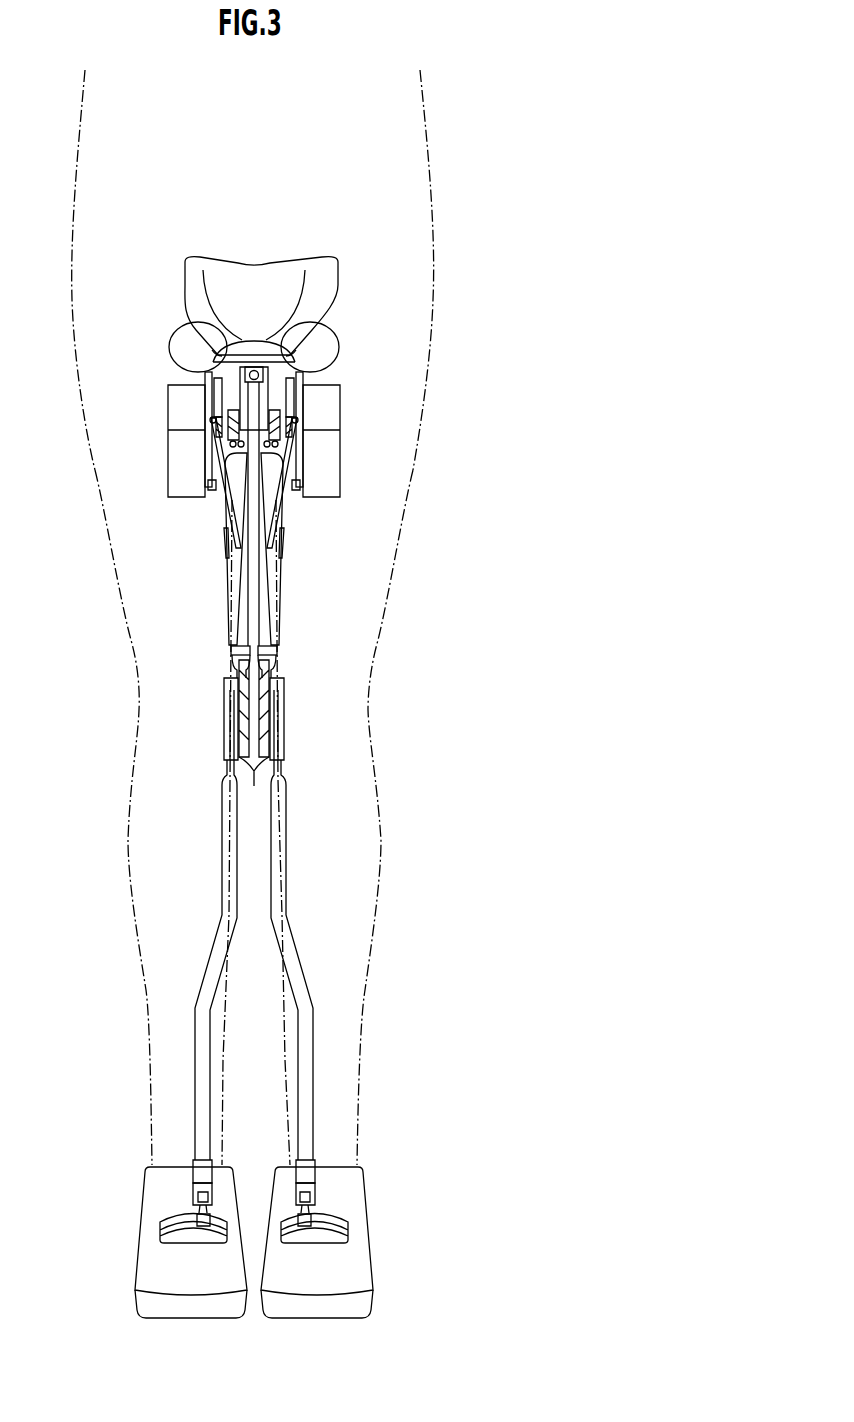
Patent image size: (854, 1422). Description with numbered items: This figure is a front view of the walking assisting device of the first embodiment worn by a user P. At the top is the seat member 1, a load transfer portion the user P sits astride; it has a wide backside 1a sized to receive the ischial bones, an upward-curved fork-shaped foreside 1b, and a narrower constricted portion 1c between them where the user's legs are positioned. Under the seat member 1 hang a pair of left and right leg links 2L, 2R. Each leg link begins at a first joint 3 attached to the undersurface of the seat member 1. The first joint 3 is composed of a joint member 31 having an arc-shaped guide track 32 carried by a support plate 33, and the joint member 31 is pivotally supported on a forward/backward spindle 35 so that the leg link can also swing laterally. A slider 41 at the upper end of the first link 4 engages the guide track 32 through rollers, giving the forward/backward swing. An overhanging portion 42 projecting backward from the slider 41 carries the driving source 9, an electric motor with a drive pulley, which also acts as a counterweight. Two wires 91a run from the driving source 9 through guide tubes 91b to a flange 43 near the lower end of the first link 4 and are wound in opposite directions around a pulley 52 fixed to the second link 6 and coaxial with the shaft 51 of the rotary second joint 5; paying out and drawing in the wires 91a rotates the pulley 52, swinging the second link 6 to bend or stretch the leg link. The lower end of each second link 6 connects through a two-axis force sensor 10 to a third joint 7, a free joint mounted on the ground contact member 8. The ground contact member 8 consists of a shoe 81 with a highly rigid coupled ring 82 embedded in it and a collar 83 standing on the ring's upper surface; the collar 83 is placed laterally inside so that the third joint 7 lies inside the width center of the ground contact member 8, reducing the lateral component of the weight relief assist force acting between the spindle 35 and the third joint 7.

The seat member 1 is at (273, 281).
The backside 1a is at (330, 333).
The foreside 1b is at (322, 282).
The constricted portion 1c is at (293, 353).
The spindle 35 is at (254, 368).
The first joint 3 is at (208, 396).
The joint member 31 is at (256, 423).
The guide track 32 is at (220, 395).
The support plate 33 is at (220, 424).
The slider 41 is at (228, 432).
The driving source 9 is at (168, 470).
The overhanging portion 42 is at (215, 505).
The guide tube 91b is at (224, 542).
The first link 4 is at (240, 572).
The flange 43 is at (232, 652).
The wire 91a is at (236, 668).
The second joint 5 is at (214, 702).
The shaft 51 is at (222, 735).
The pulley 52 is at (254, 787).
The right leg link 2R is at (172, 723).
The left leg link 2L is at (336, 723).
The second link 6 is at (222, 928).
The 2-axis force sensor 10 is at (202, 1172).
The third joint 7 is at (194, 1196).
The ground contact member 8 is at (254, 1242).
The shoe 81 is at (143, 1266).
The coupled ring 82 is at (165, 1231).
The collar 83 is at (205, 1228).
The user P is at (433, 243).